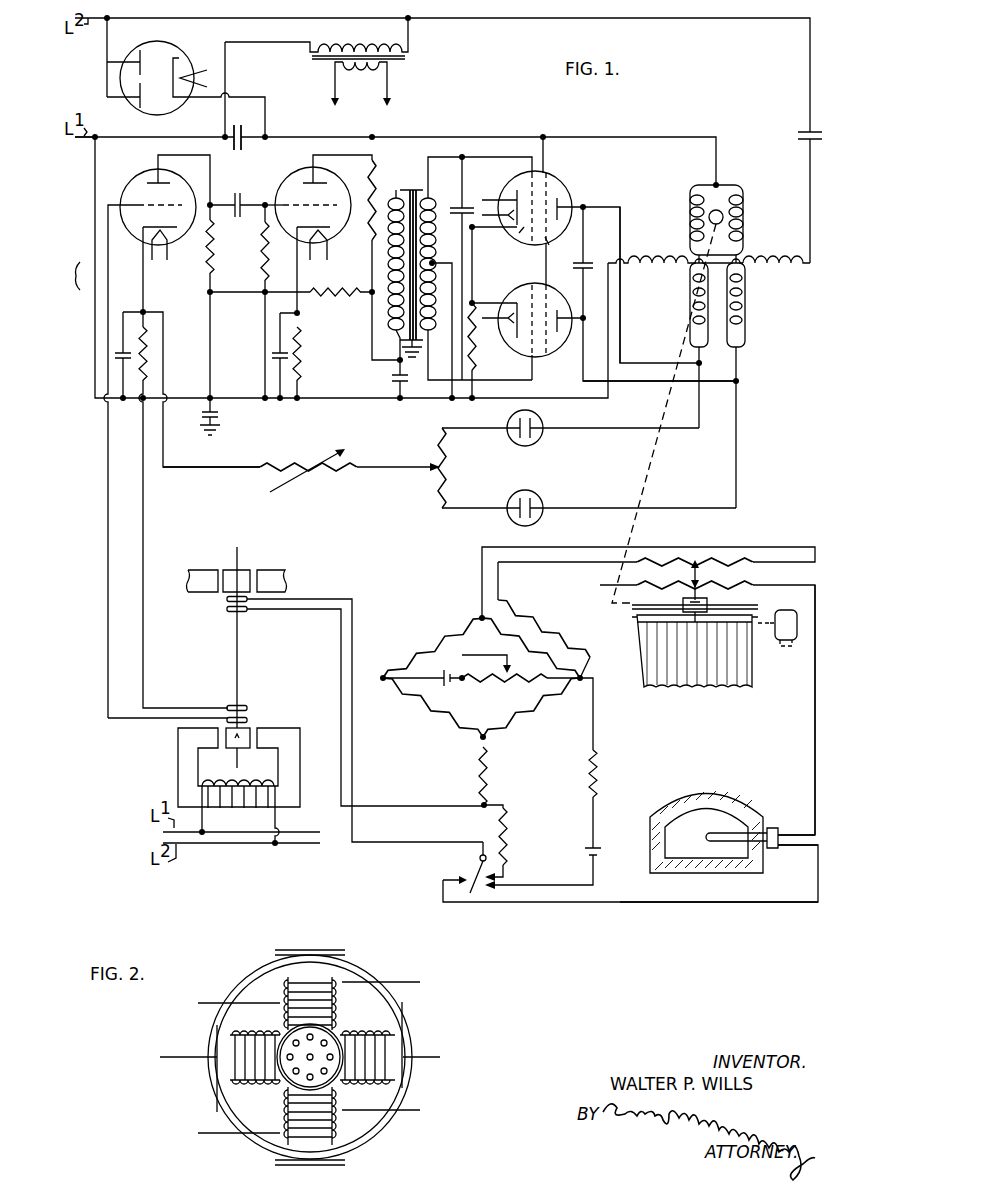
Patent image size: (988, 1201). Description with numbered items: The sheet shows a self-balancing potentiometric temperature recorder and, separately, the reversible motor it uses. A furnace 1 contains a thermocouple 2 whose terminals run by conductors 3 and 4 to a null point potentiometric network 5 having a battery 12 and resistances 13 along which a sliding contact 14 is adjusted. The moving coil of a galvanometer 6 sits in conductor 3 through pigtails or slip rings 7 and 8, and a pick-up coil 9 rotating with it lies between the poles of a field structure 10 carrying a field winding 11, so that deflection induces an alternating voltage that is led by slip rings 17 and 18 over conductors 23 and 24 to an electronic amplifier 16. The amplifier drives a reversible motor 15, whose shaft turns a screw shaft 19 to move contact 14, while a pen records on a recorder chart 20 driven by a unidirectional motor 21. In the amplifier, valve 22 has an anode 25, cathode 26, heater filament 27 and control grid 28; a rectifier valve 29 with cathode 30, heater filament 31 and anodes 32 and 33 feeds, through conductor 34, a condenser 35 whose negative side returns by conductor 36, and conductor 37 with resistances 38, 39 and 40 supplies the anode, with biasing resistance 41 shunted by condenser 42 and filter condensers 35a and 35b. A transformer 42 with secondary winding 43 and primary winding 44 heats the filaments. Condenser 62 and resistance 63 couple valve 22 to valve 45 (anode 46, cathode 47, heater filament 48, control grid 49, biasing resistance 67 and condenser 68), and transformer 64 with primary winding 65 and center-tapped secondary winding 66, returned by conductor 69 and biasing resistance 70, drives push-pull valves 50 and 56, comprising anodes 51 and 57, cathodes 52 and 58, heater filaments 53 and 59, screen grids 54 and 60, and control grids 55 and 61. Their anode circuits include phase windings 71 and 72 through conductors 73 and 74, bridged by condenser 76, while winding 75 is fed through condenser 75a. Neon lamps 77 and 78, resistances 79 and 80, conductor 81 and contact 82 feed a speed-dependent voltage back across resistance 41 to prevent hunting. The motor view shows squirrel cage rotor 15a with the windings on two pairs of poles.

In FIG. 1, the furnace 1 is at (718, 793).
In FIG. 1, the thermocouple 2 is at (709, 834).
In FIG. 1, the conductor 3 is at (706, 898).
In FIG. 1, the conductor 4 is at (812, 752).
In FIG. 1, the null point potentiometric network 5 is at (493, 645).
In FIG. 1, the galvanometer 6 is at (298, 566).
In FIG. 1, the pigtail or slip ring 7 is at (226, 600).
In FIG. 1, the pigtail or slip ring 8 is at (226, 610).
In FIG. 1, the pick-up coil 9 is at (230, 750).
In FIG. 1, the field structure 10 is at (178, 770).
In FIG. 1, the field winding 11 is at (244, 780).
In FIG. 1, the battery 12 is at (449, 682).
In FIG. 1, the resistances 13 is at (750, 564).
In FIG. 1, the sliding contact 14 is at (690, 575).
In FIG. 1, the reversible motor 15 is at (745, 165).
In FIG. 2, the reversible motor 15 is at (277, 1148).
In FIG. 2, the squirrel cage rotor 15a is at (290, 1030).
In FIG. 1, the electronic amplifier 16 is at (64, 276).
In FIG. 1, the pigtail or slip ring 17 is at (248, 721).
In FIG. 1, the pigtail or slip ring 18 is at (248, 706).
In FIG. 1, the screw shaft 19 is at (758, 606).
In FIG. 1, the recorder chart 20 is at (709, 686).
In FIG. 1, the unidirectional motor 21 is at (775, 639).
In FIG. 1, the electronic valve 22 is at (140, 166).
In FIG. 1, the conductor 23 is at (108, 522).
In FIG. 1, the conductor 24 is at (145, 522).
In FIG. 1, the anode 25 is at (168, 169).
In FIG. 1, the cathode 26 is at (144, 228).
In FIG. 1, the heater filament 27 is at (172, 242).
In FIG. 1, the control grid 28 is at (132, 188).
In FIG. 1, the rectifier valve 29 is at (168, 45).
In FIG. 1, the cathode 30 is at (180, 60).
In FIG. 1, the heater filament 31 is at (185, 92).
In FIG. 1, the anode 32 is at (137, 60).
In FIG. 1, the anode 33 is at (136, 99).
In FIG. 1, the conductor 34 is at (248, 96).
In FIG. 1, the condenser 35 is at (239, 150).
In FIG. 1, the condenser 35a is at (202, 359).
In FIG. 1, the condenser 35b is at (392, 378).
In FIG. 1, the conductor 36 is at (150, 137).
In FIG. 1, the conductor 37 is at (212, 186).
In FIG. 1, the resistance 38 is at (214, 270).
In FIG. 1, the resistance 39 is at (330, 301).
In FIG. 1, the resistance 40 is at (370, 254).
In FIG. 1, the biasing resistance 41 is at (150, 336).
In FIG. 1, the condenser / transformer 42 is at (410, 58).
In FIG. 1, the secondary winding 43 is at (365, 82).
In FIG. 1, the primary winding 44 is at (318, 41).
In FIG. 1, the electronic valve 45 is at (286, 180).
In FIG. 1, the anode 46 is at (326, 175).
In FIG. 1, the cathode 47 is at (292, 232).
In FIG. 1, the heater filament 48 is at (324, 228).
In FIG. 1, the control grid 49 is at (286, 198).
In FIG. 1, the electronic valve 50 is at (548, 174).
In FIG. 1, the anode 51 is at (568, 196).
In FIG. 1, the cathode 52 is at (509, 186).
In FIG. 1, the heater filament 53 is at (507, 198).
In FIG. 1, the screen grid 54 is at (548, 238).
In FIG. 1, the control grid 55 is at (520, 236).
In FIG. 1, the electronic valve 56 is at (532, 358).
In FIG. 1, the anode 57 is at (558, 340).
In FIG. 1, the cathode 58 is at (514, 300).
In FIG. 1, the heater filament 59 is at (490, 340).
In FIG. 1, the screen grid 60 is at (552, 307).
In FIG. 1, the control grid 61 is at (542, 282).
In FIG. 1, the condenser 62 is at (244, 228).
In FIG. 1, the resistance 63 is at (260, 245).
In FIG. 1, the transformer 64 is at (412, 186).
In FIG. 1, the primary winding 65 is at (392, 336).
In FIG. 1, the center tapped secondary winding 66 is at (432, 192).
In FIG. 1, the biasing resistance 67 is at (302, 348).
In FIG. 1, the condenser 68 is at (272, 358).
In FIG. 1, the conductor 69 is at (437, 260).
In FIG. 1, the biasing resistance 70 is at (478, 370).
In FIG. 1, the phase winding 71 is at (690, 298).
In FIG. 2, the phase winding 71 is at (284, 1100).
In FIG. 1, the phase winding 72 is at (745, 306).
In FIG. 2, the phase winding 72 is at (345, 1122).
In FIG. 1, the conductor 73 is at (624, 335).
In FIG. 1, the conductor 74 is at (644, 382).
In FIG. 1, the winding 75 is at (776, 270).
In FIG. 2, the winding 75 is at (368, 1030).
In FIG. 1, the condenser 75a is at (796, 136).
In FIG. 1, the condenser 76 is at (600, 264).
In FIG. 1, the neon lamp 77 is at (541, 440).
In FIG. 1, the neon lamp 78 is at (538, 494).
In FIG. 1, the resistance 79 is at (339, 477).
In FIG. 1, the resistance 80 is at (445, 474).
In FIG. 1, the conductor 81 is at (206, 469).
In FIG. 1, the contact 82 is at (425, 458).